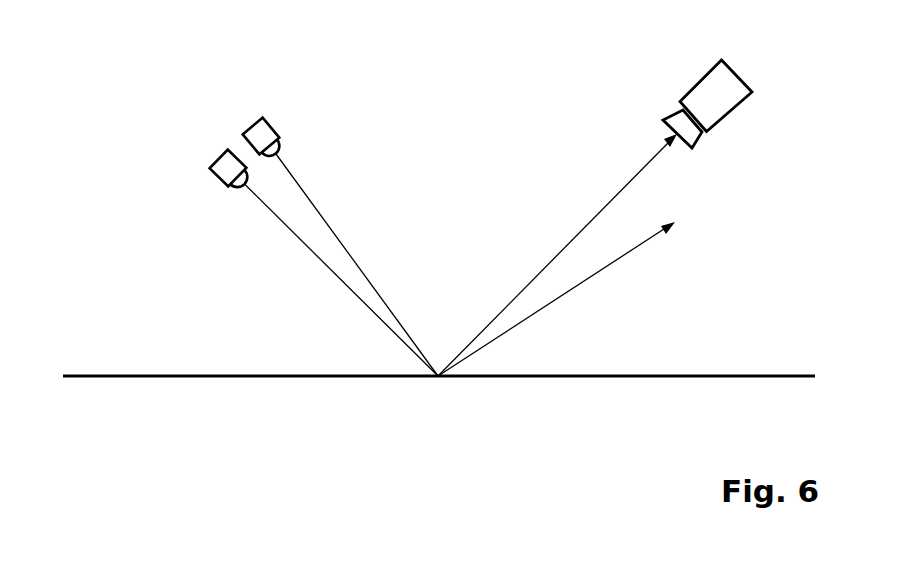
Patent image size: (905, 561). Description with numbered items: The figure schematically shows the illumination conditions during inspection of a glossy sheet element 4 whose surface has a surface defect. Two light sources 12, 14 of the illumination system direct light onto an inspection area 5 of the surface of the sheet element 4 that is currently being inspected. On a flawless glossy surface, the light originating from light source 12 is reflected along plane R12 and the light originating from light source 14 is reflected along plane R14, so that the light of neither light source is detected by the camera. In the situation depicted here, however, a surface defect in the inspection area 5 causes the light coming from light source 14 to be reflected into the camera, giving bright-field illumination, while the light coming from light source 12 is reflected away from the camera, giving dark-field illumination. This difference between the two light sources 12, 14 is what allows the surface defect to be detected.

The sheet element 4 is at (222, 375).
The inspection area 5 is at (444, 404).
The light source 12 is at (211, 171).
The light source 14 is at (273, 128).
The plane R12 is at (622, 257).
The plane R14 is at (605, 207).